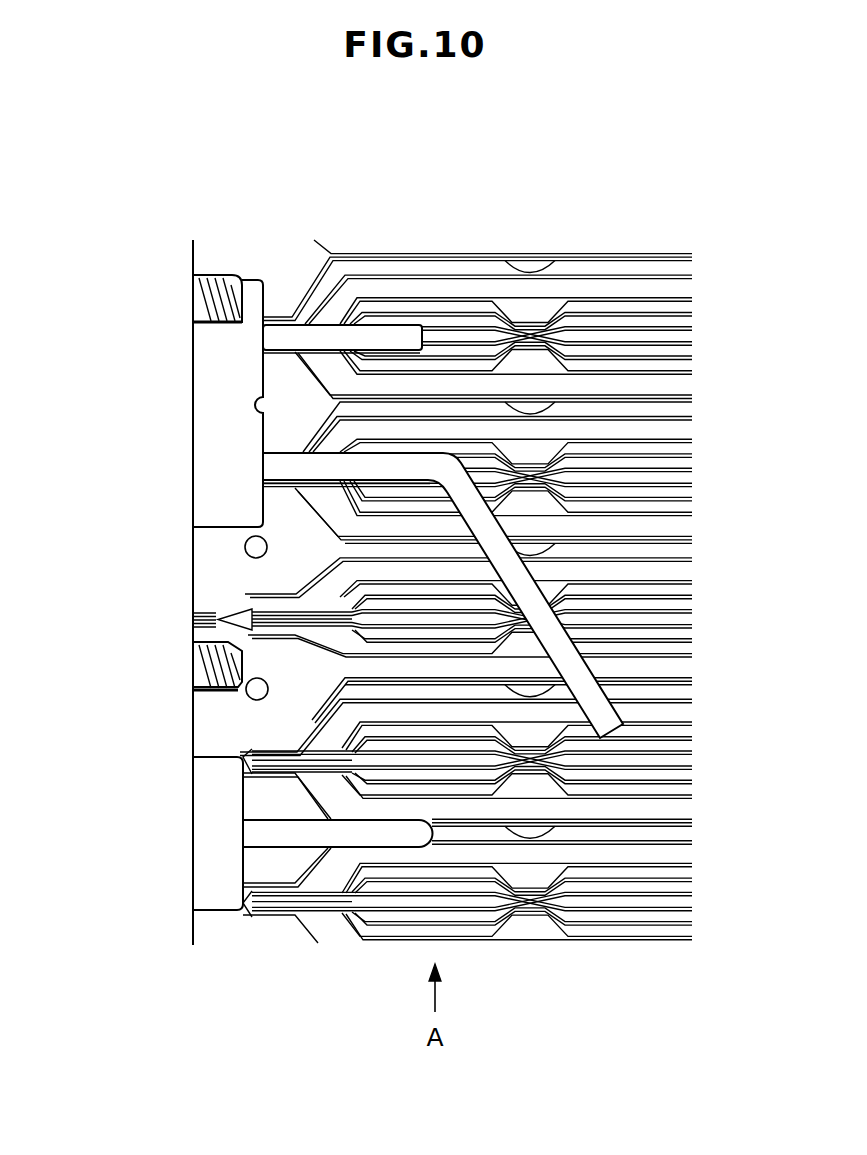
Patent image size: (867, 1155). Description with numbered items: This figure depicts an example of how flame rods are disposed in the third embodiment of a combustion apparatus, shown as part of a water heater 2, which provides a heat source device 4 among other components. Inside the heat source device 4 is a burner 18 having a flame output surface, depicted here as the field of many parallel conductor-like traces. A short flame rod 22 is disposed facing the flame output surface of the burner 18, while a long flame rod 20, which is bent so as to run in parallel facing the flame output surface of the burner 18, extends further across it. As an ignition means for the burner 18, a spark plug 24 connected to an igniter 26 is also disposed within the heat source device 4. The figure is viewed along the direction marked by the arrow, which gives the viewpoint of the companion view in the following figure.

The water heater 2 is at (425, 682).
The heat source device 4 is at (425, 682).
The burner 18 is at (713, 242).
The long flame rod 20 is at (313, 478).
The short flame rod 22 is at (295, 352).
The spark plug 24 is at (302, 842).
The igniter 26 is at (253, 843).